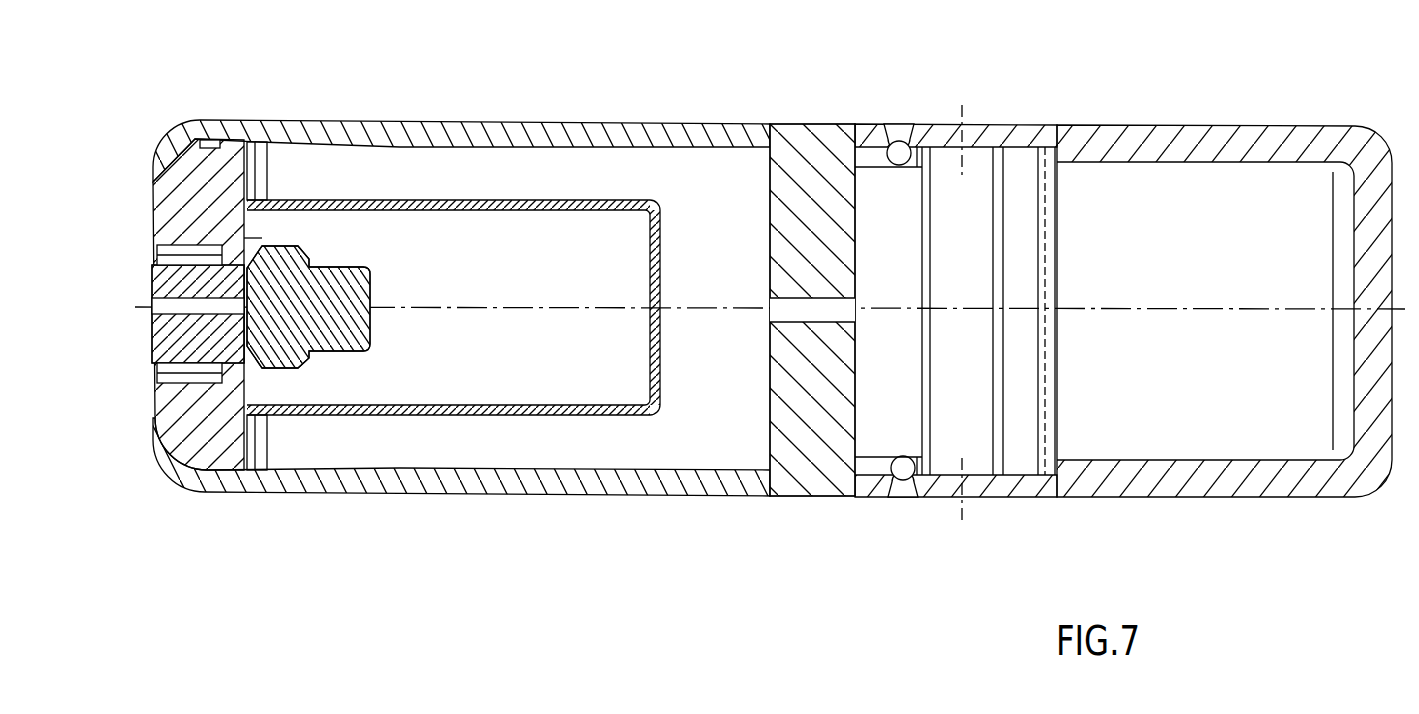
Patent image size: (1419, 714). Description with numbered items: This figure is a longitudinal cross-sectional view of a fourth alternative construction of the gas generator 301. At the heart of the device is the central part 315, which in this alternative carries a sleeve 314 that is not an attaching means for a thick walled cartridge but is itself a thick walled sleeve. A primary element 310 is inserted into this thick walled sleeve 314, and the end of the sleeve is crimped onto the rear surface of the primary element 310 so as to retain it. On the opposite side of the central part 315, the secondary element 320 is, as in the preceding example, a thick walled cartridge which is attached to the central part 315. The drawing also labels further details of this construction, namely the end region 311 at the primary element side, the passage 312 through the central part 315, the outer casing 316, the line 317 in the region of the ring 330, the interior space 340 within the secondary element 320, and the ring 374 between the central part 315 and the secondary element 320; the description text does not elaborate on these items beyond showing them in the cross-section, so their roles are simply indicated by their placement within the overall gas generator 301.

The assembly 301 is at (668, 520).
The primary element 310 is at (362, 432).
The end cap 311 is at (152, 335).
The passage 312 is at (778, 318).
The sleeve 314 is at (875, 125).
The central part 315 is at (808, 168).
The casing 316 is at (608, 125).
The section line 317 is at (967, 465).
The secondary element 320 is at (1147, 405).
The cylinder ring 330 is at (968, 178).
The chamber 340 is at (1177, 228).
The ring 374 is at (1048, 135).